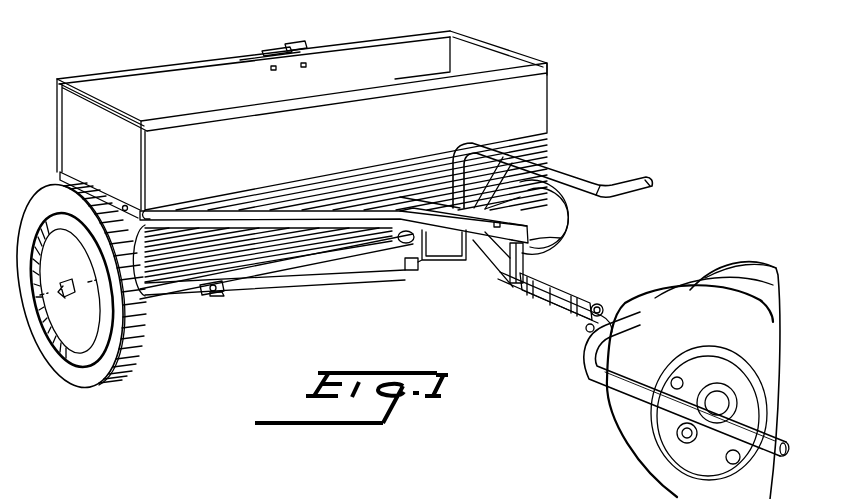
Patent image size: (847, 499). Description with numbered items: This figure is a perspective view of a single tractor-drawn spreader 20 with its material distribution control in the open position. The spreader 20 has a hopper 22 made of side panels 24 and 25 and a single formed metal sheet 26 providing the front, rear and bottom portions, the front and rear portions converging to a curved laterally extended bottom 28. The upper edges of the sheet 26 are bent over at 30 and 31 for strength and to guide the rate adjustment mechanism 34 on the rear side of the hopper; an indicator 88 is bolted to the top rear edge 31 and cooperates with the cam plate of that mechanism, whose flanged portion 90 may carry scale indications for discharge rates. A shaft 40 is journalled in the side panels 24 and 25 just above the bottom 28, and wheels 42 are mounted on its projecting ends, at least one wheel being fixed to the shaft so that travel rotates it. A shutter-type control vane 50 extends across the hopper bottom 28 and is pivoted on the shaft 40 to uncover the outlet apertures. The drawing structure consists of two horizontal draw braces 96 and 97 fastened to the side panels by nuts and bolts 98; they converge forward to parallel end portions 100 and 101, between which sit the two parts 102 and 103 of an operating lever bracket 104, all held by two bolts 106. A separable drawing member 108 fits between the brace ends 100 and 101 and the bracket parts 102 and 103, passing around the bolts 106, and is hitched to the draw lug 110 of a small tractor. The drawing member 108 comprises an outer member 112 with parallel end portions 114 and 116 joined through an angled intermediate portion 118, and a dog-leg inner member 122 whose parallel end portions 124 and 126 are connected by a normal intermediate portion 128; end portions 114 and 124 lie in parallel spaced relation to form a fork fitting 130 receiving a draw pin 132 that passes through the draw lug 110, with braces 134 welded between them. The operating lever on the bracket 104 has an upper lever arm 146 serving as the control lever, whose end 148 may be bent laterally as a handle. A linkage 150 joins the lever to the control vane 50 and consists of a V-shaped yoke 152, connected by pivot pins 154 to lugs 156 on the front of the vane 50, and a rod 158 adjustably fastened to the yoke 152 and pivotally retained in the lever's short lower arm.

The spreader 20 is at (581, 63).
The hopper 22 is at (302, 118).
The side panel 24 is at (88, 107).
The side panel 25 is at (487, 57).
The formed metal sheet 26 is at (389, 109).
The curved bottom 28 is at (170, 268).
The bent-over upper edge 30 is at (313, 100).
The bent-over rear edge 31 is at (199, 68).
The rate adjustment mechanism 34 is at (278, 41).
The shaft 40 is at (70, 283).
The wheels 42 is at (88, 380).
The shutter-type control vane 50 is at (262, 270).
The indicator 88 is at (292, 50).
The flanged portion 90 is at (258, 57).
The draw brace 96 is at (346, 218).
The draw brace 97 is at (552, 175).
The nuts and bolts 98 is at (122, 190).
The brace end portion 100 is at (474, 255).
The brace end portion 101 is at (545, 204).
The bracket part 102 is at (443, 216).
The bracket part 103 is at (490, 183).
The operating lever bracket 104 is at (445, 187).
The bolts 106 is at (456, 232).
The drawing member 108 is at (537, 283).
The draw lug 110 is at (630, 297).
The outer member 112 is at (510, 312).
The end portion 114 is at (575, 335).
The end portion 116 is at (548, 222).
The angled intermediate portion 118 is at (500, 316).
The inner member 122 is at (583, 302).
The end portion 124 is at (582, 305).
The end portion 126 is at (562, 237).
The intermediate normal portion 128 is at (490, 262).
The fork fitting 130 is at (598, 290).
The draw pin 132 is at (618, 298).
The braces 134 is at (550, 330).
The upper lever arm 146 is at (588, 180).
The lever arm end 148 is at (642, 176).
The linkage 150 is at (396, 292).
The V-shaped yoke 152 is at (352, 275).
The pivot pins 154 is at (215, 287).
The lugs 156 is at (210, 277).
The rod 158 is at (428, 273).